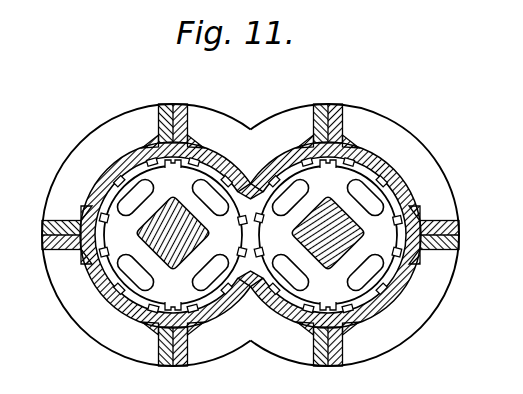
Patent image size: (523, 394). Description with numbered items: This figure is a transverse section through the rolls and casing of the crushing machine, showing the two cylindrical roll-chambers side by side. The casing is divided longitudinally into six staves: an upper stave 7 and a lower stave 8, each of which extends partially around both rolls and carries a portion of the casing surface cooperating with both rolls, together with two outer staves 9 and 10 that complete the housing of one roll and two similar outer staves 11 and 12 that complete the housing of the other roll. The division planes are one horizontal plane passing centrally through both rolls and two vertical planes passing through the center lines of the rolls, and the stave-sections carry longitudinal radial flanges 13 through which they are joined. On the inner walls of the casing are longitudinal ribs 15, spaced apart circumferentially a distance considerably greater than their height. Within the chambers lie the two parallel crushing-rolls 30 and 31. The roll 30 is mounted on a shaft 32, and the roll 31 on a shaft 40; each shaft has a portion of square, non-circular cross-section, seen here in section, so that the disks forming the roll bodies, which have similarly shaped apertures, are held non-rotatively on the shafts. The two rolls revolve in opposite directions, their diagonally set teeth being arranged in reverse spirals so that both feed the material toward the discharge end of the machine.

The upper stave 7 is at (218, 122).
The lower stave 8 is at (248, 337).
The outer stave 9 is at (80, 153).
The outer stave 10 is at (72, 308).
The outer stave 11 is at (422, 162).
The outer stave 12 is at (435, 305).
The longitudinal radial flange 13 is at (152, 106).
The longitudinal rib 15 is at (120, 293).
The crushing-roll 30 is at (115, 225).
The crushing-roll 31 is at (387, 230).
The shaft 32 is at (160, 232).
The shaft 40 is at (331, 243).